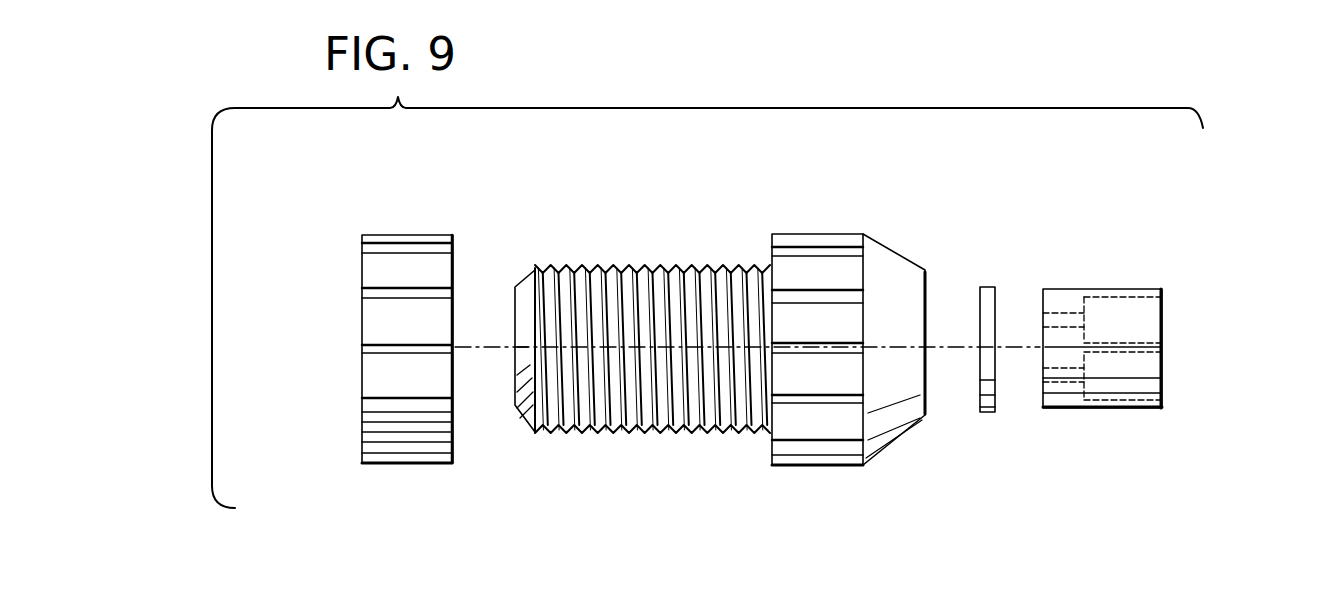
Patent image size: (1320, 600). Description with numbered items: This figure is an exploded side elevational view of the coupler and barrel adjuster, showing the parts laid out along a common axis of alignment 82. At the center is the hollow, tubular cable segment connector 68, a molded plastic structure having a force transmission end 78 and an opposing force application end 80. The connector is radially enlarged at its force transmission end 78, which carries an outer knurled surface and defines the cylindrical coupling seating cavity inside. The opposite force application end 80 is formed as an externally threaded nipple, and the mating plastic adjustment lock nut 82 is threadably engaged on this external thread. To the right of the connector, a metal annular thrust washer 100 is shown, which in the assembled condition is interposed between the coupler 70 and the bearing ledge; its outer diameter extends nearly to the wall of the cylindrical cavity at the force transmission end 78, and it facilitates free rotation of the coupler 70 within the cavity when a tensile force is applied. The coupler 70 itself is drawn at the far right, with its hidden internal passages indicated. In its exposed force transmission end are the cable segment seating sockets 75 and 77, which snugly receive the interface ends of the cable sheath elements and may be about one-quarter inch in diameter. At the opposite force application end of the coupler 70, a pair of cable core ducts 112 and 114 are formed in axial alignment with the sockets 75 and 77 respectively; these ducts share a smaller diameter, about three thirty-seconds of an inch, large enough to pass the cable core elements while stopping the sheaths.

The cable segment connector 68 is at (881, 322).
The coupler 70 is at (1151, 352).
The cable segment seating socket 75 is at (1135, 353).
The cable segment seating socket 77 is at (1135, 299).
The force transmission end 78 is at (926, 416).
The force application end 80 is at (527, 263).
The adjustment lock nut 82 is at (398, 268).
The thrust washer 100 is at (990, 291).
The cable core duct 112 is at (1057, 377).
The cable core duct 114 is at (1060, 316).